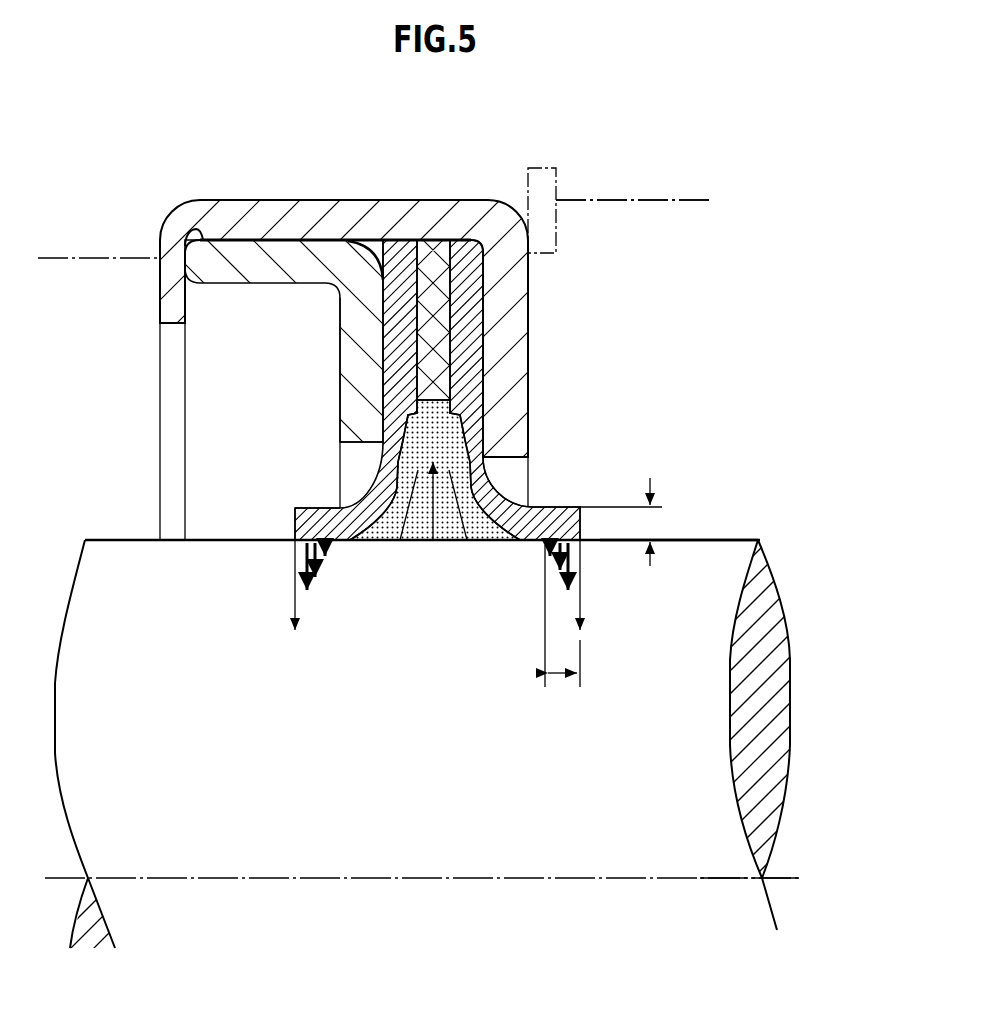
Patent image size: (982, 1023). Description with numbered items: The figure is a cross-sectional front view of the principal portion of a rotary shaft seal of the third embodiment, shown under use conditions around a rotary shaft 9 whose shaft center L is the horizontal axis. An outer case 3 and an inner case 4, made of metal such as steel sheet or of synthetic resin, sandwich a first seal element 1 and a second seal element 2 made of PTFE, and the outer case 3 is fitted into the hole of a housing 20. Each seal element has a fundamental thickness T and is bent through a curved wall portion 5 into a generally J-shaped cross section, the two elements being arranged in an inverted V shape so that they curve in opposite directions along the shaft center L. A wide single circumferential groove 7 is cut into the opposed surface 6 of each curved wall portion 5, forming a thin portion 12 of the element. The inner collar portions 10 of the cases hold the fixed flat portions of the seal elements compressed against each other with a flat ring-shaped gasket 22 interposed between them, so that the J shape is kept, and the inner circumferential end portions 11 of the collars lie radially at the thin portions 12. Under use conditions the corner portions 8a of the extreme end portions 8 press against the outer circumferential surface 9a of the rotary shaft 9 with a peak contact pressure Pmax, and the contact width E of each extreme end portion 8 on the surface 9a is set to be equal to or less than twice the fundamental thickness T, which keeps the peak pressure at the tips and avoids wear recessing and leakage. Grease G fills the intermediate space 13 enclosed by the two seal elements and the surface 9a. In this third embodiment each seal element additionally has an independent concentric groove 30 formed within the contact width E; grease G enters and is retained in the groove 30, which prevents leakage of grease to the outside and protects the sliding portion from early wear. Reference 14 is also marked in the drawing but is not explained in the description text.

The first seal element 1 is at (325, 506).
The second seal element 2 is at (542, 508).
The outer case 3 is at (515, 287).
The inner case 4 is at (305, 263).
The curved wall portion 5 is at (330, 506).
The opposed surface 6 is at (400, 543).
The single circumferential groove 7 is at (423, 543).
The extreme end portion 8 is at (292, 520).
The corner portion 8a is at (291, 542).
The rotary shaft 9 is at (685, 690).
The outer circumferential surface 9a is at (722, 540).
The inner collar portion 10 is at (340, 343).
The inner circumferential end portion 11 is at (353, 430).
The thin portion 12 is at (337, 390).
The intermediate space 13 is at (433, 543).
The contact region 14 is at (294, 548).
The housing 20 is at (633, 206).
The flat ring-shaped gasket 22 is at (430, 263).
The independent concentric groove 30 is at (307, 545).
The grease G is at (480, 543).
The fundamental thickness T is at (627, 520).
The contact width E is at (562, 625).
The shaft center L is at (790, 875).
The peak contact pressure Pmax is at (613, 720).